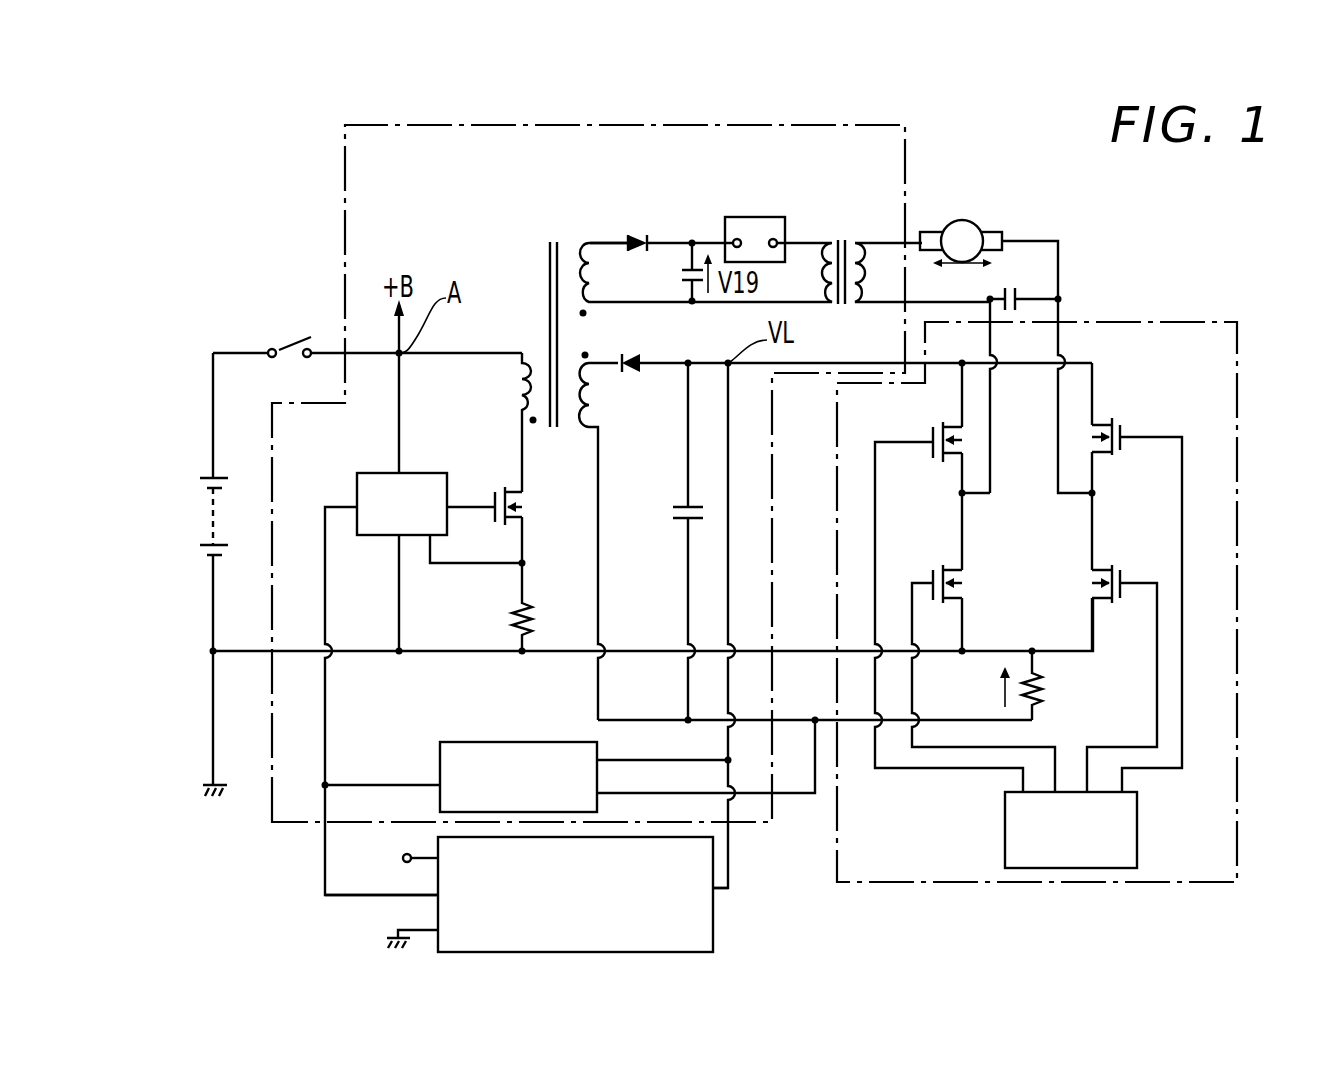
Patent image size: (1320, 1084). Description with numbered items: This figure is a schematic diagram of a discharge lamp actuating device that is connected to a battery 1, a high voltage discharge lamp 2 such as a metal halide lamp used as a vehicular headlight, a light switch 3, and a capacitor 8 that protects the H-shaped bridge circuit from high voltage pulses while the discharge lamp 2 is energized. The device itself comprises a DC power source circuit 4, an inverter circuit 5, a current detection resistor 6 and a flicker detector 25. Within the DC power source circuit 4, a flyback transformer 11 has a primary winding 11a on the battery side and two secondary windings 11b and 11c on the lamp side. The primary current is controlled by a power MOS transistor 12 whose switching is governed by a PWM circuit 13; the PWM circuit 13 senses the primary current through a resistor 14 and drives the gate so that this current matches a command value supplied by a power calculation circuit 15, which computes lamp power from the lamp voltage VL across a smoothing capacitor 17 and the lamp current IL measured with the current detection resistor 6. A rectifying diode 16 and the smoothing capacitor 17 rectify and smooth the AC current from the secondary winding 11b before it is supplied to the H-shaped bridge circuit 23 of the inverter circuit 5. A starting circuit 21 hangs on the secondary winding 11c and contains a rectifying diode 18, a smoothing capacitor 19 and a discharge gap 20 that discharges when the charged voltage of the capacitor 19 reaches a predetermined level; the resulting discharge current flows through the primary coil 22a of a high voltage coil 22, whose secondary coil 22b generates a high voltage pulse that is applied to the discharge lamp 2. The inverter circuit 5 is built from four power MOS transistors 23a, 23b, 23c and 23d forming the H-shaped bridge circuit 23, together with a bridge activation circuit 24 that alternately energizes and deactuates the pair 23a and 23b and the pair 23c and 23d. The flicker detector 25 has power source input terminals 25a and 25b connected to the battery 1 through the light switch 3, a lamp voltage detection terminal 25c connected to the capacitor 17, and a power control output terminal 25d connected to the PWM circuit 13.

The battery 1 is at (205, 512).
The high voltage discharge lamp 2 is at (966, 219).
The light switch 3 is at (290, 342).
The DC power source circuit 4 is at (344, 153).
The inverter circuit 5 is at (1240, 433).
The current detection resistor 6 is at (1042, 683).
The capacitor 8 is at (1012, 285).
The flyback transformer 11 is at (559, 437).
The primary winding 11a is at (518, 384).
The secondary winding 11b is at (595, 382).
The secondary winding 11c is at (597, 250).
The power MOS transistor 12 is at (500, 485).
The PWM circuit 13 is at (378, 473).
The resistor 14 is at (533, 608).
The power calculation circuit 15 is at (500, 742).
The rectifying diode 16 is at (626, 357).
The smoothing capacitor 17 is at (683, 507).
The rectifying diode 18 is at (638, 234).
The smoothing capacitor 19 is at (686, 268).
The discharge gap 20 is at (747, 217).
The starting circuit 21 is at (624, 212).
The high voltage coil 22 is at (841, 229).
The primary coil 22a is at (805, 253).
The secondary coil 22b is at (878, 255).
The H-shaped bridge circuit 23 is at (1026, 545).
The power MOS transistor 23a is at (950, 418).
The power MOS transistor 23b is at (1115, 563).
The power MOS transistor 23c is at (1116, 418).
The power MOS transistor 23d is at (948, 563).
The bridge activation circuit 24 is at (1083, 868).
The flicker detector 25 is at (557, 894).
The power source input terminal 25a is at (425, 862).
The power source input terminal 25b is at (438, 931).
The lamp voltage detection terminal 25c is at (694, 882).
The power control output terminal 25d is at (407, 896).